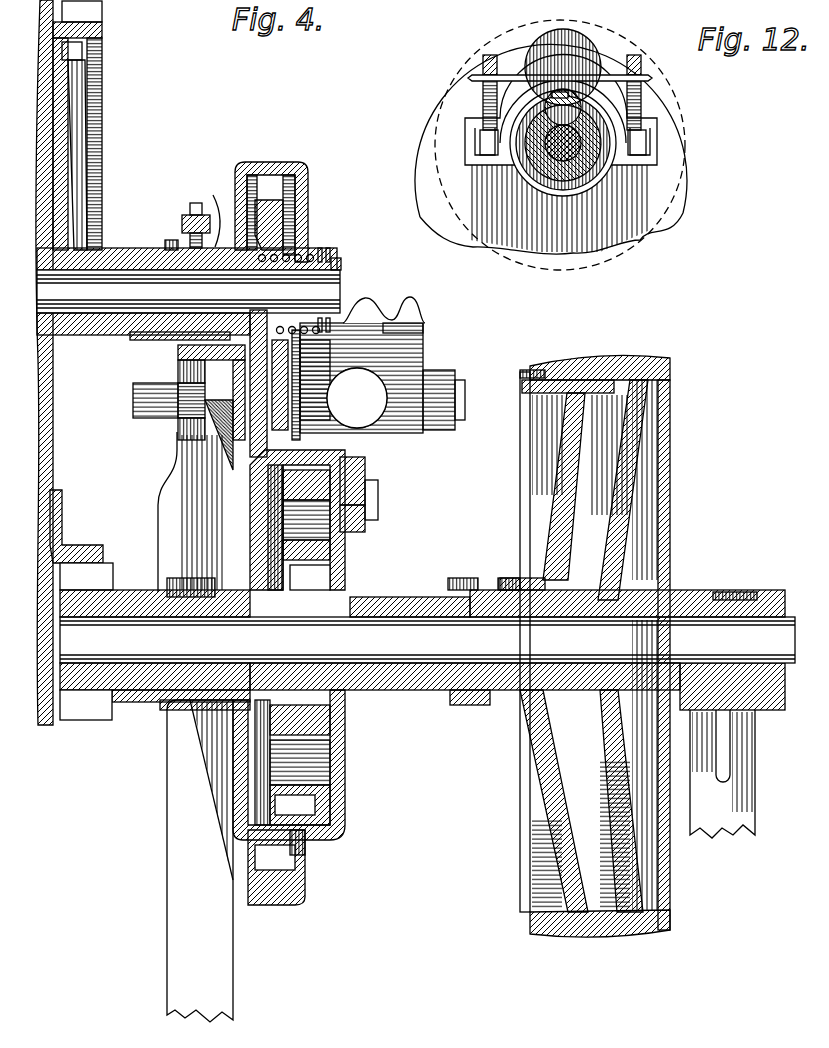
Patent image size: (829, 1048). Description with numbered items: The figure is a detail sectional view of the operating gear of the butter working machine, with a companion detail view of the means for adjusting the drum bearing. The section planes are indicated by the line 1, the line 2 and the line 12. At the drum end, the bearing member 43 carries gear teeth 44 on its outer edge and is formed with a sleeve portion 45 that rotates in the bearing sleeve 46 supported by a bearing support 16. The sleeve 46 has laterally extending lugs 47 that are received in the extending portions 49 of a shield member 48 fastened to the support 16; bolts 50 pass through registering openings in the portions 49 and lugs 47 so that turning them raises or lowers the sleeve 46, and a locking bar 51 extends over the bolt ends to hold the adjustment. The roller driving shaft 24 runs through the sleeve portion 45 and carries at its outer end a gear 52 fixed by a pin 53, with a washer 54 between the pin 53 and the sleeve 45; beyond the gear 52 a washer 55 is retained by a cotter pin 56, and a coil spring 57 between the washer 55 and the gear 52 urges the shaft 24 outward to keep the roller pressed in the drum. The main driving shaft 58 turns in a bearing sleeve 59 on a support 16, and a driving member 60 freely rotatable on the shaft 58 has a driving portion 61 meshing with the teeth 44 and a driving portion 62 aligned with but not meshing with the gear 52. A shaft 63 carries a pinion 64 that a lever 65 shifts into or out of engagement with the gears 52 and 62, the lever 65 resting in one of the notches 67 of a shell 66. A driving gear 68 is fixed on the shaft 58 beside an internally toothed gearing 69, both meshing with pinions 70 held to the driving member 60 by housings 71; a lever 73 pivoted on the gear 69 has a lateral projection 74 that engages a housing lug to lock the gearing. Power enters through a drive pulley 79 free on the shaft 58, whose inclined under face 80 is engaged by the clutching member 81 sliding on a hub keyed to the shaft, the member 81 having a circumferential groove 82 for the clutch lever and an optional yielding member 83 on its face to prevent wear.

In FIG. 4, the line 1— 1 is at (413, 170).
In FIG. 4, the line 2— 2 is at (327, 270).
In FIG. 4, the line 12— 12 is at (137, 265).
In FIG. 4, the bearing supports 16 is at (172, 516).
In FIG. 4, the driving shaft 24 is at (188, 291).
In FIG. 12, the driving shaft 24 is at (540, 165).
In FIG. 4, the bearing member 43 is at (80, 252).
In FIG. 4, the gear teeth 44 is at (90, 15).
In FIG. 4, the sleeve portion 45 is at (165, 262).
In FIG. 12, the sleeve portion 45 is at (548, 188).
In FIG. 4, the bearing sleeve 46 is at (218, 245).
In FIG. 12, the bearing sleeve 46 is at (522, 108).
In FIG. 12, the lugs 47 is at (488, 143).
In FIG. 4, the shield member 48 is at (240, 162).
In FIG. 12, the shield member 48 is at (653, 203).
In FIG. 12, the extending portions 49 is at (470, 125).
In FIG. 4, the bolts 50 is at (197, 203).
In FIG. 12, the bolts 50 is at (478, 85).
In FIG. 4, the locking bar 51 is at (184, 222).
In FIG. 12, the locking bar 51 is at (548, 75).
In FIG. 4, the gear 52 is at (296, 212).
In FIG. 4, the pin 53 is at (262, 257).
In FIG. 4, the washer 54 is at (283, 232).
In FIG. 4, the washer 55 is at (330, 262).
In FIG. 4, the cotter pin 56 is at (341, 266).
In FIG. 4, the spring 57 is at (330, 255).
In FIG. 4, the driving shaft 58 is at (388, 652).
In FIG. 4, the bearing sleeve 59 is at (155, 703).
In FIG. 4, the driving member 60 is at (133, 672).
In FIG. 4, the driving portion 61 is at (83, 692).
In FIG. 4, the driving portion 62 is at (305, 850).
In FIG. 4, the shaft 63 is at (148, 417).
In FIG. 4, the pinion 64 is at (303, 377).
In FIG. 4, the lever 65 is at (365, 390).
In FIG. 4, the shell 66 is at (410, 322).
In FIG. 4, the notches 67 is at (348, 320).
In FIG. 4, the driving gear 68 is at (323, 600).
In FIG. 4, the internally toothed gearing 69 is at (422, 675).
In FIG. 4, the pinions 70 is at (365, 476).
In FIG. 4, the housings 71 is at (378, 500).
In FIG. 4, the lever 73 is at (357, 520).
In FIG. 4, the lateral projection 74 is at (365, 605).
In FIG. 4, the drive pulley 79 is at (635, 412).
In FIG. 4, the under face 80 is at (590, 380).
In FIG. 4, the clutching member 81 is at (560, 472).
In FIG. 4, the circumferential groove 82 is at (488, 578).
In FIG. 4, the yielding member 83 is at (524, 372).